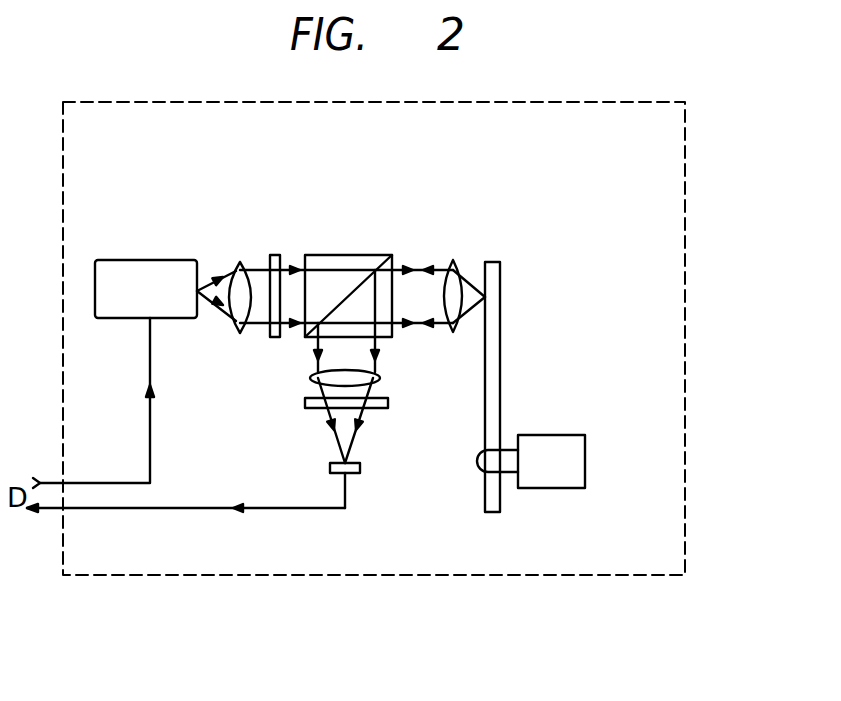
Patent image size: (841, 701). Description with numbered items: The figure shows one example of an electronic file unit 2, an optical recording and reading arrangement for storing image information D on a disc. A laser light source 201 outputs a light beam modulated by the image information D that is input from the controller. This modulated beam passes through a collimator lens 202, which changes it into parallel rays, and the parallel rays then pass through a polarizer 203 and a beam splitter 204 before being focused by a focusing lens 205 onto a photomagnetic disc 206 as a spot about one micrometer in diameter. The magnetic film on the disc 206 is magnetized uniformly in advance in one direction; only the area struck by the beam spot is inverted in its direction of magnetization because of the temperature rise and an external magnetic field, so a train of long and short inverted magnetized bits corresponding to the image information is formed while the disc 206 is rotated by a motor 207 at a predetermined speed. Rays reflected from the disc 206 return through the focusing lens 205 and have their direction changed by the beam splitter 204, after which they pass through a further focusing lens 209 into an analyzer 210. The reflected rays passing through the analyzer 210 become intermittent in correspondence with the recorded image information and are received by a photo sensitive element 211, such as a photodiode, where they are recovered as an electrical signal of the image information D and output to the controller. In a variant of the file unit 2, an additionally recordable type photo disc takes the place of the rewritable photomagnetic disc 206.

The electronic file unit 2 is at (587, 102).
The laser light source 201 is at (152, 260).
The collimator lens 202 is at (242, 262).
The polarizer 203 is at (278, 255).
The beam splitter 204 is at (360, 255).
The focusing lens 205 is at (453, 262).
The photomagnetic disc 206 is at (500, 310).
The motor 207 is at (555, 435).
The focusing lens 209 is at (382, 378).
The analyzer 210 is at (388, 402).
The photo sensitive element 211 is at (360, 470).